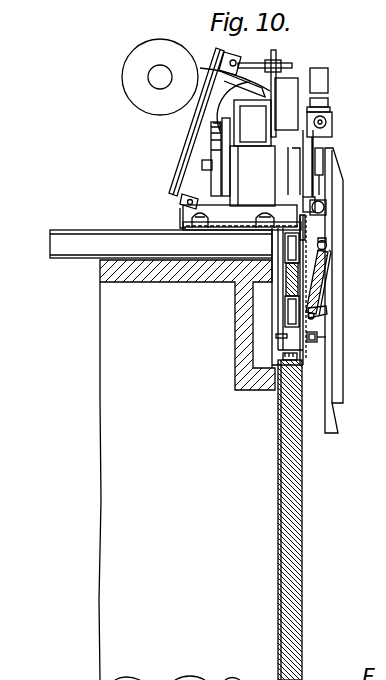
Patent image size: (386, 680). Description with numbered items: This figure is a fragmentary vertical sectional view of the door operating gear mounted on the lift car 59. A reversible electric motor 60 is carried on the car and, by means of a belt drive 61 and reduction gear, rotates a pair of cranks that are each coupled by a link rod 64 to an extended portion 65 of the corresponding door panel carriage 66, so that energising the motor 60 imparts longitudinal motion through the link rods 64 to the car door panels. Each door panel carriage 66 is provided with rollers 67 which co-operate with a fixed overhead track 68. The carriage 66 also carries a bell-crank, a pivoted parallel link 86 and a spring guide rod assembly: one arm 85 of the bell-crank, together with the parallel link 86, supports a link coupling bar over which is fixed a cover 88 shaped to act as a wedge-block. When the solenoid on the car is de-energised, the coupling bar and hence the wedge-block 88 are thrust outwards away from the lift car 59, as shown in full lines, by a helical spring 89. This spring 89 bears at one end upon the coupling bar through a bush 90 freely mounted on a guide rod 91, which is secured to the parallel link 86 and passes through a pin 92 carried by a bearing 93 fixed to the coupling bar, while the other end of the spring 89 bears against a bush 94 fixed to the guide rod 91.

The lift car 59 is at (240, 376).
The reversible electric motor 60 is at (128, 71).
The belt drive 61 is at (239, 89).
The link rod 64 is at (330, 115).
The extended portion of door panel carriage 65 is at (299, 147).
The door panel carriage 66 is at (304, 229).
The rollers 67 is at (281, 247).
The fixed overhead track 68 is at (287, 284).
The arm of bell-crank 85 is at (322, 193).
The pivoted parallel link 86 is at (318, 346).
The cover 88 is at (339, 294).
The helical spring 89 is at (318, 306).
The bush 90 is at (324, 262).
The guide rod 91 is at (323, 274).
The pin 92 is at (326, 245).
The bearing 93 is at (327, 236).
The bush 94 is at (318, 318).